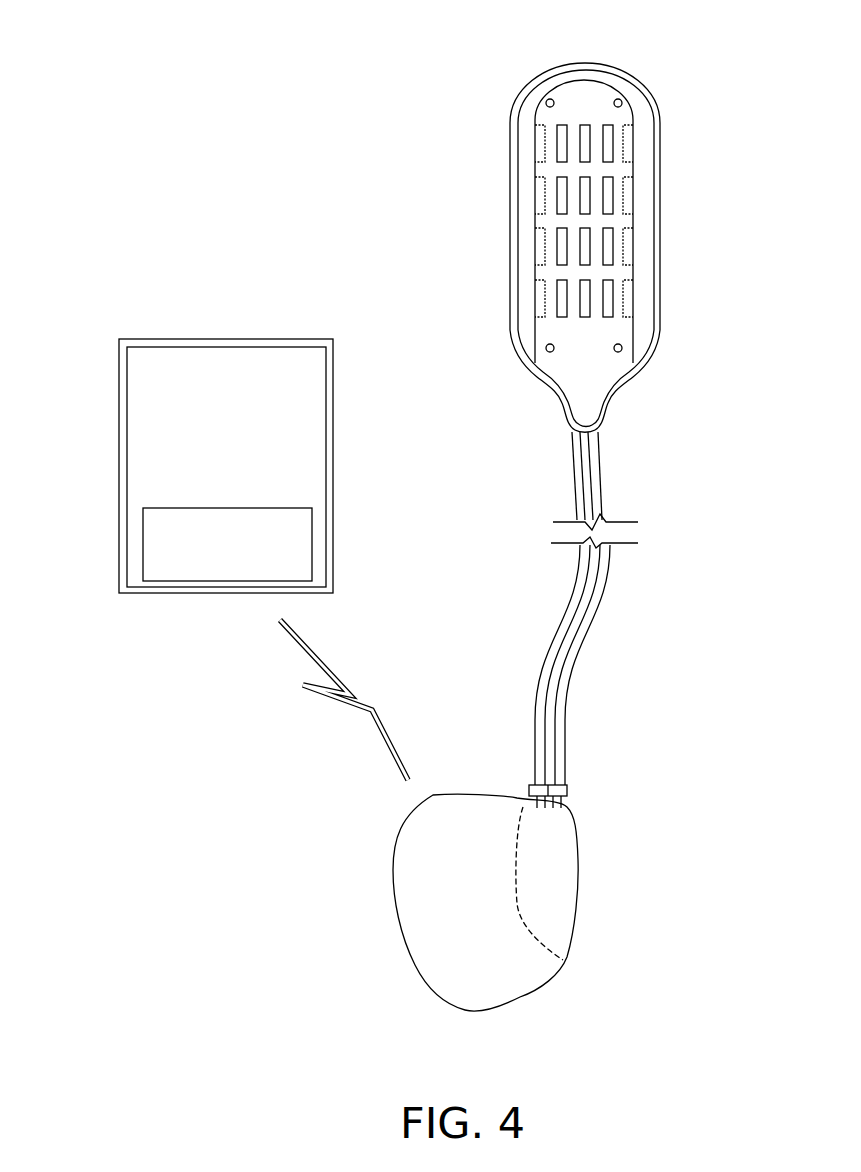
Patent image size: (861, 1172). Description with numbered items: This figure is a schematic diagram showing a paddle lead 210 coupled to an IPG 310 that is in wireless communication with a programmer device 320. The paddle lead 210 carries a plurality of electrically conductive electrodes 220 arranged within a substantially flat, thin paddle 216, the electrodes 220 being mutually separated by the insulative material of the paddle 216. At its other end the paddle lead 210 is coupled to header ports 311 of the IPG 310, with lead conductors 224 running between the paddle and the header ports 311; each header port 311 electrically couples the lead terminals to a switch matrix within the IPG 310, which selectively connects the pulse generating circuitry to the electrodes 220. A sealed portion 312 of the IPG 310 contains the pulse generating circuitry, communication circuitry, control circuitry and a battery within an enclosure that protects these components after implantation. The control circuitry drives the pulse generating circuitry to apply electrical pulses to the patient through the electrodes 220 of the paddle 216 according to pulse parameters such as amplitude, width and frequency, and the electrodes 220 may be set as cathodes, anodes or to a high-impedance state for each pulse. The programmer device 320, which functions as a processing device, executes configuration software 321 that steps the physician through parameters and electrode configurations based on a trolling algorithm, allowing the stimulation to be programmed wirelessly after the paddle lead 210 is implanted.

The paddle lead 210 is at (490, 95).
The paddle 216 is at (660, 211).
The electrodes 220 is at (562, 246).
The lead wires 224 is at (565, 632).
The header ports 311 is at (527, 789).
The IPG 310 is at (600, 971).
The sealed portion 312 is at (578, 893).
The programmer device 320 is at (119, 446).
The configuration software 321 is at (305, 547).